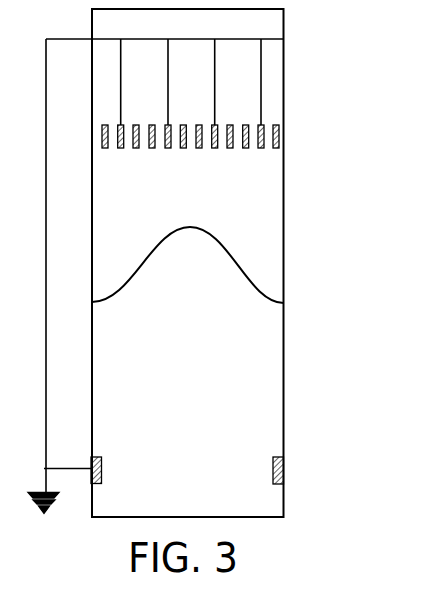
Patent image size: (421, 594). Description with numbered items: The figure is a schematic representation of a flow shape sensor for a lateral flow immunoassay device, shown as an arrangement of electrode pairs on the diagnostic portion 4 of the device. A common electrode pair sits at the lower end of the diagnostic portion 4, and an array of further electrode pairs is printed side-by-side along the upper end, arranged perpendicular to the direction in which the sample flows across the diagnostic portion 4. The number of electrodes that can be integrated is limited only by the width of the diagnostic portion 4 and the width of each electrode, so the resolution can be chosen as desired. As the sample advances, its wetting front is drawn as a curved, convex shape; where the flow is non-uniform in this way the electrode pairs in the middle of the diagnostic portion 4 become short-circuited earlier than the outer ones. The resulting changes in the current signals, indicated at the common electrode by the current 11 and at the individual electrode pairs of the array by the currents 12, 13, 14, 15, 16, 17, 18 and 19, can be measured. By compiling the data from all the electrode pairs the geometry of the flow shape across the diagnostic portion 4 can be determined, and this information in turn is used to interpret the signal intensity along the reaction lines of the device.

The diagnostic portion 4 is at (284, 372).
The output current I1 contact 11 is at (318, 471).
The current I2 contact 12 is at (105, 125).
The current I3 contact 13 is at (136, 125).
The current I4 contact 14 is at (152, 125).
The current I5 contact 15 is at (183, 125).
The current I6 contact 16 is at (199, 125).
The current I7 contact 17 is at (230, 125).
The current I8 contact 18 is at (246, 125).
The current I9 contact 19 is at (276, 125).